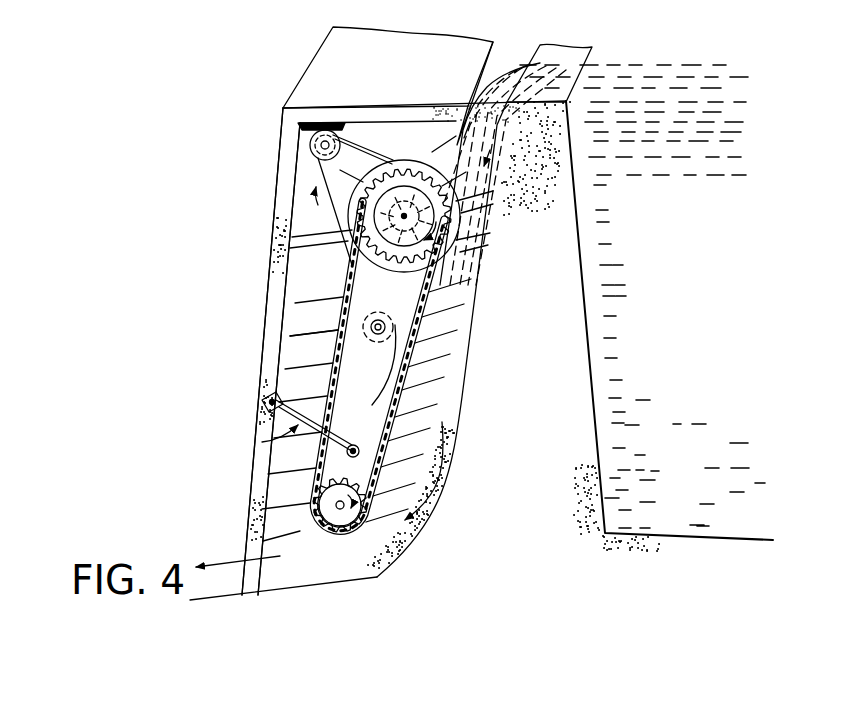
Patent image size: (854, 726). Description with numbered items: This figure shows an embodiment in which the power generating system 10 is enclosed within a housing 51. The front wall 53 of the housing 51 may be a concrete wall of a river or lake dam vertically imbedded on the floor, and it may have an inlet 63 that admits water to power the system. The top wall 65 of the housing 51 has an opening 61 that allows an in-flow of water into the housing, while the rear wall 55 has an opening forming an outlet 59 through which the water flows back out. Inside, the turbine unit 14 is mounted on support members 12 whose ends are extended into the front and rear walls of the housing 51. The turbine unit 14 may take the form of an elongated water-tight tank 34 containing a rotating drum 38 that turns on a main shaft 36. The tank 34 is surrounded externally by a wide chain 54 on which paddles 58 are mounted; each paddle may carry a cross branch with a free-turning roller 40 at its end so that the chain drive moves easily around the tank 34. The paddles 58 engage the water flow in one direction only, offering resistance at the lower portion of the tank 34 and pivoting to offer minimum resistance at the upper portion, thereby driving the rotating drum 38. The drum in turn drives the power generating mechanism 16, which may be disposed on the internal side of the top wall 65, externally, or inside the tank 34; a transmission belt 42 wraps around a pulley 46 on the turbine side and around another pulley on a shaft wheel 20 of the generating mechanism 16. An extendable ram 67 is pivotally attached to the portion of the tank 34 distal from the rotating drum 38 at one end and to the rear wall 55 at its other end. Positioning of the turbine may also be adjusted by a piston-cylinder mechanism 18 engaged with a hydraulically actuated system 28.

The power generating system 10 is at (441, 327).
The support member 12 is at (318, 250).
The turbine unit 14 is at (422, 350).
The power generating mechanism 16 is at (307, 139).
The piston-cylinder mechanism 18 is at (262, 440).
The shaft wheel 20 is at (305, 147).
The hydraulically actuated system 28 is at (300, 436).
The water-tight tank 34 is at (352, 388).
The main shaft 36 is at (407, 196).
The rotating drum 38 is at (433, 247).
The roller 40 is at (406, 378).
The transmission belt 42 is at (340, 235).
The pulley 46 is at (391, 168).
The housing 51 is at (278, 84).
The front wall 53 is at (560, 318).
The wide chain 54 is at (326, 533).
The rear wall 55 is at (262, 328).
The paddles 58 is at (330, 307).
The outlet 59 is at (243, 550).
The opening 61 is at (512, 62).
The inlet 63 is at (590, 68).
The top wall 65 is at (402, 63).
The extendable ram 67 is at (272, 398).